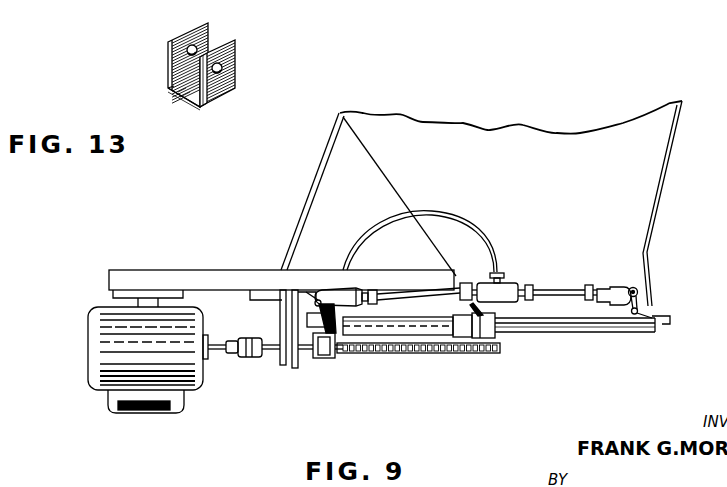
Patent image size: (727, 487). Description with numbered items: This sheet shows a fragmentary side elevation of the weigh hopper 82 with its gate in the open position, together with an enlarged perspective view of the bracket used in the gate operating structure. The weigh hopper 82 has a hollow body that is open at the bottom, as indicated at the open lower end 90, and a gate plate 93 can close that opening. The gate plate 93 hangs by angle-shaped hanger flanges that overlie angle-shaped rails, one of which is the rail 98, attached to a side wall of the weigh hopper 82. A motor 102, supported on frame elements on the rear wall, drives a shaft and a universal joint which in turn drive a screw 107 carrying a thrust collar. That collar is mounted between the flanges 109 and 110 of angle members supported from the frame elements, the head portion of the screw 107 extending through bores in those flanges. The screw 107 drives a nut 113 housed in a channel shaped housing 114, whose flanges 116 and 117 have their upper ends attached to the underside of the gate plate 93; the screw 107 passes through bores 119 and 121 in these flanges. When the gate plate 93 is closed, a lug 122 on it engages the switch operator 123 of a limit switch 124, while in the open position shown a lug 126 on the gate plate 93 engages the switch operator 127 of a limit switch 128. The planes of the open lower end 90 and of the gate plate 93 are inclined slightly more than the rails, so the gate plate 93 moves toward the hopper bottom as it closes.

In FIG. 9, the weigh hopper 82 is at (663, 188).
In FIG. 9, the open bottom 90 is at (597, 334).
In FIG. 9, the gate plate 93 is at (392, 336).
In FIG. 9, the rail 98 is at (555, 322).
In FIG. 9, the motor 102 is at (186, 360).
In FIG. 9, the screw 107 is at (448, 354).
In FIG. 9, the flange 109 is at (281, 364).
In FIG. 9, the flange 110 is at (295, 366).
In FIG. 9, the nut 113 is at (321, 359).
In FIG. 9, the lug 122 is at (479, 340).
In FIG. 9, the switch operator 123 is at (636, 308).
In FIG. 9, the limit switch 124 is at (613, 288).
In FIG. 9, the lug 126 is at (331, 312).
In FIG. 9, the switch operator 127 is at (313, 310).
In FIG. 9, the limit switch 128 is at (330, 289).
In FIG. 13, the channel shaped housing 114 is at (275, 34).
In FIG. 13, the flange 116 is at (169, 61).
In FIG. 13, the flange 117 is at (236, 58).
In FIG. 13, the bore 119 is at (168, 88).
In FIG. 13, the bore 121 is at (217, 98).